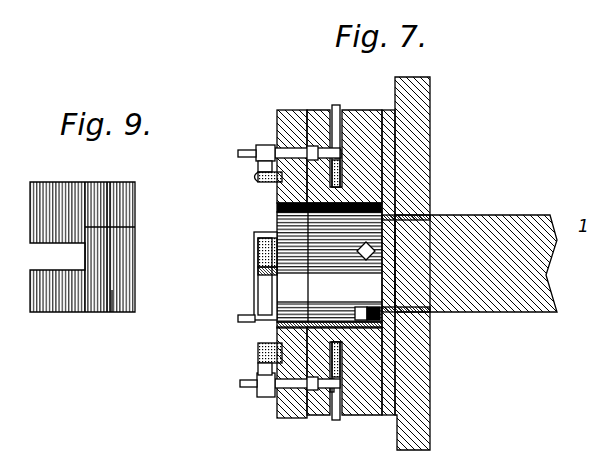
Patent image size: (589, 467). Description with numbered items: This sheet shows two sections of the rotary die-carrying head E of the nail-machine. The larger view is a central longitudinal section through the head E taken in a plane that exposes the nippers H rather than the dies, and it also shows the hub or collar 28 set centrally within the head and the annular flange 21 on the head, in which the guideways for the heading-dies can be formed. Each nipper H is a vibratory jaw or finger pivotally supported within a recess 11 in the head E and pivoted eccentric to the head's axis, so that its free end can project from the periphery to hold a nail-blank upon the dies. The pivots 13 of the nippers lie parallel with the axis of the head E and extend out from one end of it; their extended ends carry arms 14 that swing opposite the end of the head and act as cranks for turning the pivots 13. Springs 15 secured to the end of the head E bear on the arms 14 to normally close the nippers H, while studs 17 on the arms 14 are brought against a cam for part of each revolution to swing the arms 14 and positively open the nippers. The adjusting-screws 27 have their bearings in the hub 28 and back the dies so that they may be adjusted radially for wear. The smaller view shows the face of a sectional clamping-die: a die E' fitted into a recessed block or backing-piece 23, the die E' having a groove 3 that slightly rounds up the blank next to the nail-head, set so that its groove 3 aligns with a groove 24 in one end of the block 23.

In FIG. 9, the groove 3 is at (112, 219).
In FIG. 7, the recess 11 is at (341, 108).
In FIG. 7, the pivot 13 is at (296, 152).
In FIG. 7, the arm 14 is at (258, 146).
In FIG. 7, the spring 15 is at (258, 170).
In FIG. 7, the stud 17 is at (238, 154).
In FIG. 7, the annular flange 21 is at (430, 86).
In FIG. 7, the block or backing-piece 23 is at (368, 125).
In FIG. 9, the block or backing-piece 23 is at (112, 299).
In FIG. 9, the groove 24 is at (117, 300).
In FIG. 7, the adjusting-screw 27 is at (366, 260).
In FIG. 7, the hub or collar 28 is at (287, 277).
In FIG. 7, the rotary die-carrying head E is at (282, 251).
In FIG. 7, the nipper H is at (334, 105).
In FIG. 9, the die E' is at (105, 235).